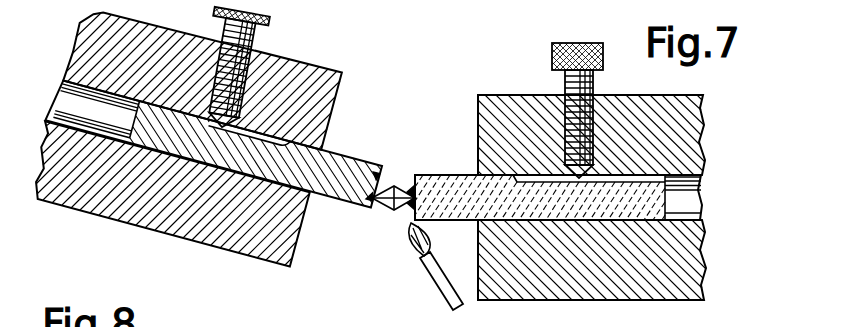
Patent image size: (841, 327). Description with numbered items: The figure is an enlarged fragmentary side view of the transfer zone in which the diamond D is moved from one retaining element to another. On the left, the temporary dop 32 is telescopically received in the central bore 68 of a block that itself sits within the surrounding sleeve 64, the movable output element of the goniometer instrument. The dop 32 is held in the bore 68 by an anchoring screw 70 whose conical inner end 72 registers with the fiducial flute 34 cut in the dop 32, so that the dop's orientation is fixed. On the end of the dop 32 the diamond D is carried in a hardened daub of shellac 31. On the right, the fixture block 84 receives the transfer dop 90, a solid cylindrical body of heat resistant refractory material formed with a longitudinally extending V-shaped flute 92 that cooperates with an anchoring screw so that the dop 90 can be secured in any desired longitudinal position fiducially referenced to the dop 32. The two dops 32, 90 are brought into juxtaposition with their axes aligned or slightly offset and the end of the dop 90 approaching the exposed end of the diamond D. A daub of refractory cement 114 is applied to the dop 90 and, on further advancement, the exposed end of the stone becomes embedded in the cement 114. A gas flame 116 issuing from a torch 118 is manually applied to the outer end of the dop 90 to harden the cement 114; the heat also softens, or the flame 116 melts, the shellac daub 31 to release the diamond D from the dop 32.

The daub of shellac 31 is at (394, 185).
The temporary dop 32 is at (328, 201).
The fiducial flute 34 is at (258, 137).
The sleeve 64 is at (323, 68).
The central bore 68 is at (62, 108).
The anchoring screw 70 is at (267, 68).
The conical inner end 72 is at (217, 112).
The fixture block 84 is at (680, 108).
The transfer dop 90 is at (420, 176).
The V-shaped flute 92 is at (647, 177).
The refractory cement 114 is at (405, 212).
The gas flame 116 is at (413, 249).
The torch 118 is at (444, 292).
The diamond D is at (385, 212).